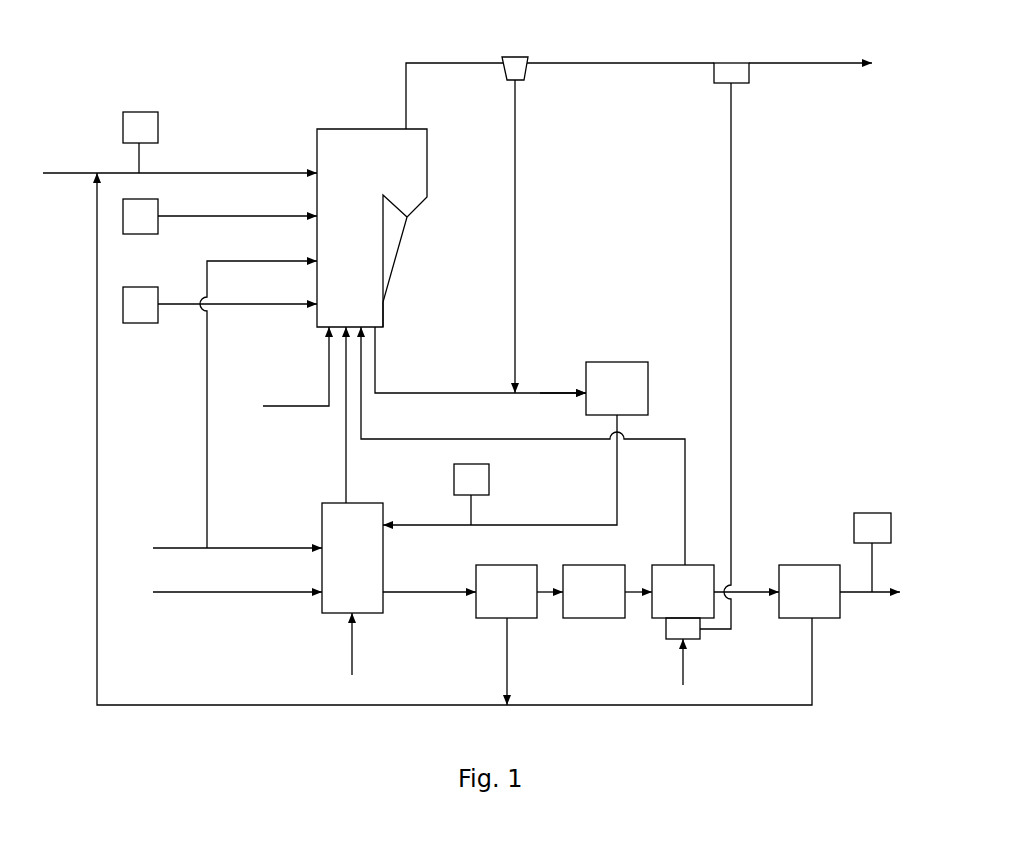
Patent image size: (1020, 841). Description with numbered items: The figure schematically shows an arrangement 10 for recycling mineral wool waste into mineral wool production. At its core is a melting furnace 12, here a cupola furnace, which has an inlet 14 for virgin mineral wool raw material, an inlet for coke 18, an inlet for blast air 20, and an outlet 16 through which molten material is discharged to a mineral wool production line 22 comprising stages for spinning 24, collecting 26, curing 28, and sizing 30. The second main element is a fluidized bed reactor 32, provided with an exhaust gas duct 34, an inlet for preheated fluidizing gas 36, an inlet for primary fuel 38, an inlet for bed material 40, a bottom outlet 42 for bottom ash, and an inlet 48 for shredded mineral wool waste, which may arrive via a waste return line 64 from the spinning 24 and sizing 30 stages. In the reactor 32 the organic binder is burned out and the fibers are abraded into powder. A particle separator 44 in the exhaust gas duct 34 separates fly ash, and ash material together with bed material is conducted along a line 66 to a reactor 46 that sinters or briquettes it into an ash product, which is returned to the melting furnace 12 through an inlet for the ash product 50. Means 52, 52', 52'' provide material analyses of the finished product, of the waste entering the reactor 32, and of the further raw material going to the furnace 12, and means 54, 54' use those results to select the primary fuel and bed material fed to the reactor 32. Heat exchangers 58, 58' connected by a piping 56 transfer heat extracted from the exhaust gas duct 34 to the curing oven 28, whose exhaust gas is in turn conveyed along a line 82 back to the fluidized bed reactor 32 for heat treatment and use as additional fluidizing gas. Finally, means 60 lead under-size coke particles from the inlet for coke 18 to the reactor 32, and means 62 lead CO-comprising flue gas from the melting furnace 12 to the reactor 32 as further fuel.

The arrangement 10 is at (250, 84).
The melting furnace 12 is at (352, 558).
The inlet for virgin mineral wool raw material 14 is at (243, 592).
The outlet for molten mineral wool material 16 is at (435, 598).
The inlet for coke 18 is at (294, 548).
The inlet for blast air 20 is at (352, 650).
The mineral wool production line 22 is at (837, 653).
The spinning stage 24 is at (506, 591).
The collecting stage 26 is at (594, 591).
The curing oven 28 is at (683, 591).
The sizing stage 30 is at (809, 591).
The fluidized bed reactor 32 is at (372, 228).
The exhaust gas duct 34 is at (453, 63).
The inlet for preheated fluidizing gas 36 is at (329, 345).
The inlet for primary fuel 38 is at (304, 304).
The inlet for bed material 40 is at (302, 216).
The bottom outlet 42 is at (376, 348).
The particle separator 44 is at (528, 72).
The reactor for sintering or briquetting 46 is at (617, 388).
The inlet for shredded mineral wool waste 48 is at (298, 172).
The inlet for the ash product 50 is at (448, 525).
The means for providing a material analysis 52 is at (892, 544).
The means for providing a material analysis 52' is at (163, 142).
The means for providing a material analysis 52'' is at (501, 494).
The means to determine the quality of the primary fuel 54 is at (156, 230).
The means to determine the quality of the bed material 54' is at (159, 318).
The piping 56 is at (732, 195).
The heat exchanger 58 is at (757, 94).
The heat exchanger 58' is at (655, 651).
The means for leading under-size coke particles 60 is at (207, 420).
The means for leading CO-comprising flue gas 62 is at (346, 445).
The waste return line 64 is at (97, 440).
The line 66 is at (548, 393).
The line 82 is at (685, 495).